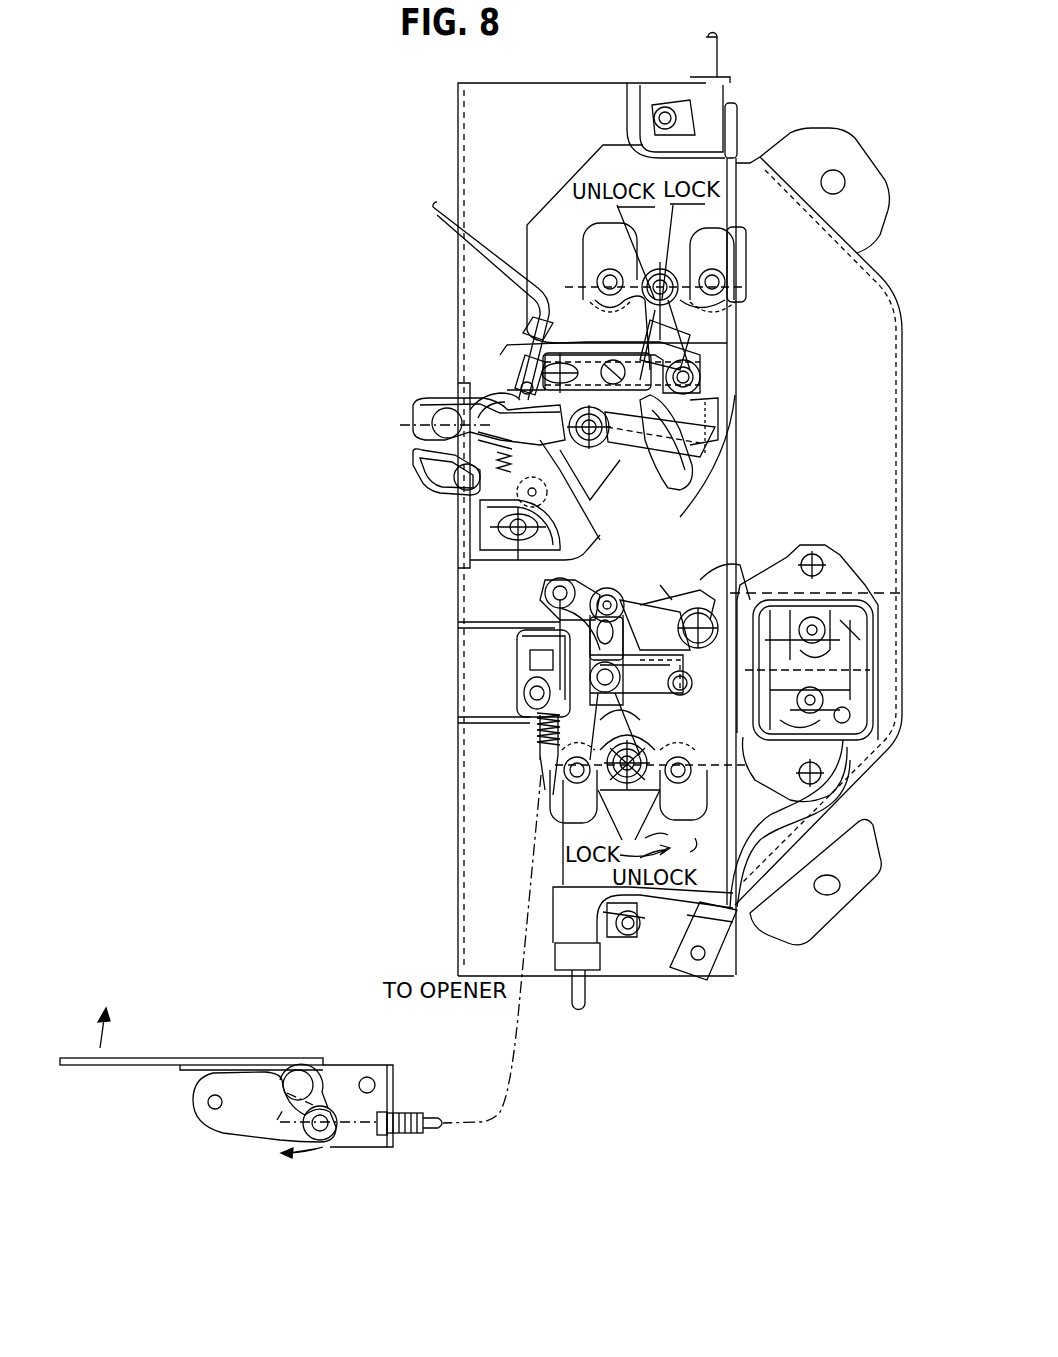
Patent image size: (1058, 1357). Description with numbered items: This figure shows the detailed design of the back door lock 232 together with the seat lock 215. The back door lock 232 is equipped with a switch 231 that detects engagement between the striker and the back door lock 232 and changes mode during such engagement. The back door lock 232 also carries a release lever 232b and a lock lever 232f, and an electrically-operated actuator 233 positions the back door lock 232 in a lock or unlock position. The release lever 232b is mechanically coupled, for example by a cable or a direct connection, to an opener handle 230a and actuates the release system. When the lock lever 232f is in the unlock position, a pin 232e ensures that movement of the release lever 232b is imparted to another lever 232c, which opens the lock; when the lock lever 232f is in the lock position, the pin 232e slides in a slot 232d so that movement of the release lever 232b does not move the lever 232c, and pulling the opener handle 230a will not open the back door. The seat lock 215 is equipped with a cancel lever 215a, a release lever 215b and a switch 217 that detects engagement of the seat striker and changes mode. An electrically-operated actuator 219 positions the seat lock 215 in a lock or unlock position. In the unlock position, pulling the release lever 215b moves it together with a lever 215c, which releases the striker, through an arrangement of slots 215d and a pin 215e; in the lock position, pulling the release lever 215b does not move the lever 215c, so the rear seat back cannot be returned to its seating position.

The electrically-operated actuator 219 is at (600, 146).
The switch 217 is at (522, 337).
The seat lock 215 is at (413, 495).
The cancel lever 215a is at (700, 357).
The release lever 215b is at (720, 432).
The lever 215c is at (585, 468).
The slots 215d is at (700, 400).
The pin 215e is at (601, 490).
The switch 231 is at (858, 790).
The back door lock 232 is at (837, 602).
The release lever 232b is at (537, 604).
The lever 232c is at (720, 590).
The slot 232d is at (625, 590).
The pin 232e is at (578, 620).
The lock lever 232f is at (528, 650).
The electrically-operated actuator 233 is at (707, 885).
The opener handle 230a is at (170, 1061).